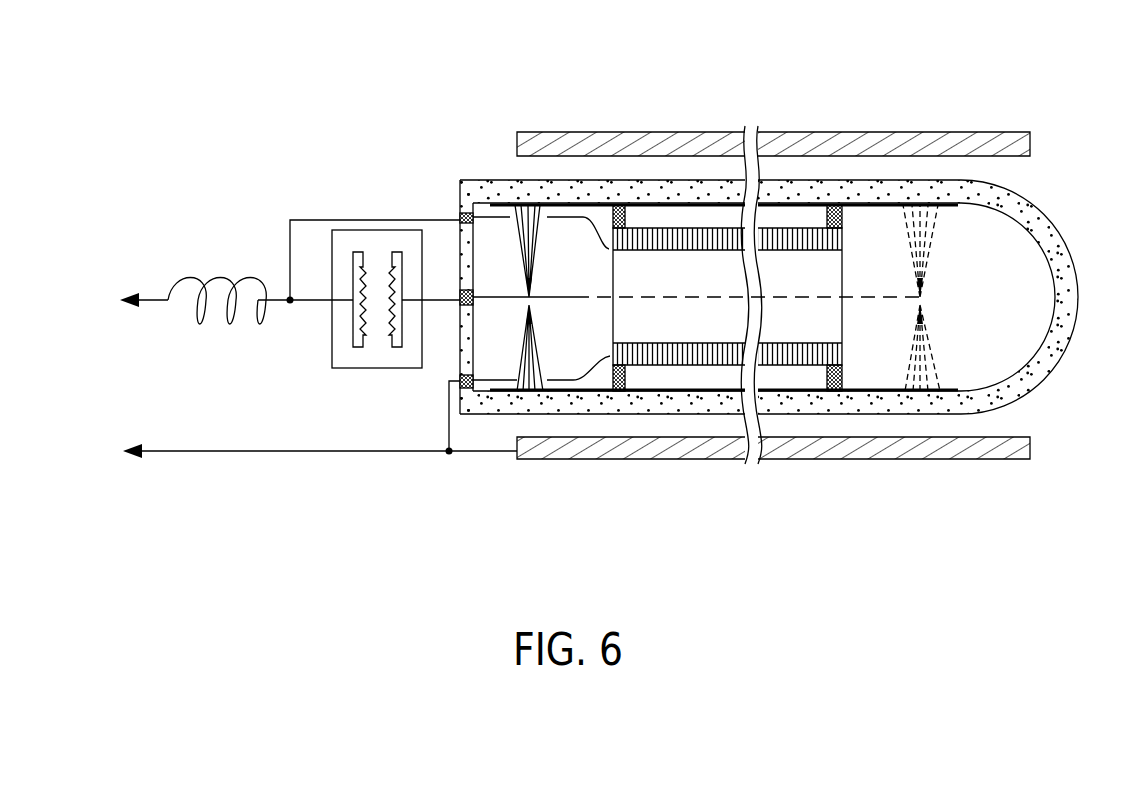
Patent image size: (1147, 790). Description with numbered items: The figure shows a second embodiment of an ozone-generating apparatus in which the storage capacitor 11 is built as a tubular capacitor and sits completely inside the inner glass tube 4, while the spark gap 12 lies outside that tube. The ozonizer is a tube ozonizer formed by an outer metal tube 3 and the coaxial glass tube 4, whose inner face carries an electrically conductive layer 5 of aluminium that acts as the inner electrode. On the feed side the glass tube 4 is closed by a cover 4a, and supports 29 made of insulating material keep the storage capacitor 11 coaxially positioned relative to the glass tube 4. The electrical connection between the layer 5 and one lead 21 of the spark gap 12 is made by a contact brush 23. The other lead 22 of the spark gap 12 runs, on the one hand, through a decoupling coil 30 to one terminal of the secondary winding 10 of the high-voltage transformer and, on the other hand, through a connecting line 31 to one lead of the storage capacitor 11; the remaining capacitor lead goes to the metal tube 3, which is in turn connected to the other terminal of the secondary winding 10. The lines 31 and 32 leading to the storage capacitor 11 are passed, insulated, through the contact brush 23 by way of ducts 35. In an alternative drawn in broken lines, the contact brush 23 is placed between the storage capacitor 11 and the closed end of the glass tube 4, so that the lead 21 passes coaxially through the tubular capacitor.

The outer metal tube 3 is at (972, 142).
The inner glass tube 4 is at (1042, 360).
The cover 4a is at (457, 265).
The electrically conductive layer 5 is at (945, 393).
The secondary winding 10 is at (82, 393).
The storage capacitor 11 is at (723, 350).
The spark gap 12 is at (390, 230).
The lead of the spark gap 21 is at (443, 302).
The other lead of the spark gap 22 is at (306, 304).
The contact brush 23 is at (518, 236).
The supports 29 is at (622, 391).
The decoupling coil 30 is at (205, 281).
The connecting line 31 is at (335, 220).
The line to the storage capacitor 32 is at (568, 380).
The ducts 35 is at (474, 223).